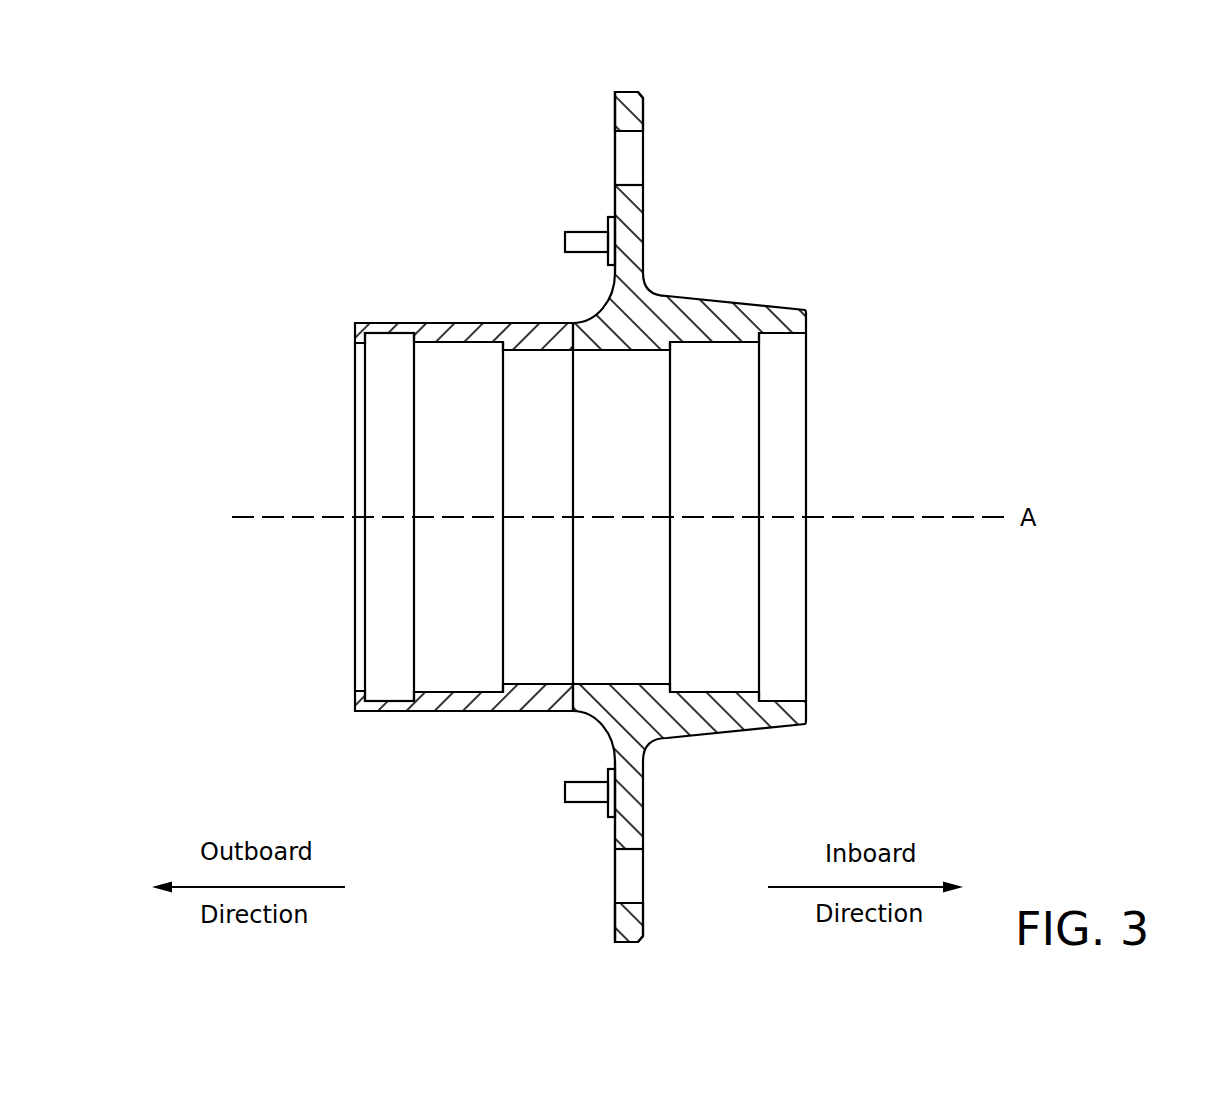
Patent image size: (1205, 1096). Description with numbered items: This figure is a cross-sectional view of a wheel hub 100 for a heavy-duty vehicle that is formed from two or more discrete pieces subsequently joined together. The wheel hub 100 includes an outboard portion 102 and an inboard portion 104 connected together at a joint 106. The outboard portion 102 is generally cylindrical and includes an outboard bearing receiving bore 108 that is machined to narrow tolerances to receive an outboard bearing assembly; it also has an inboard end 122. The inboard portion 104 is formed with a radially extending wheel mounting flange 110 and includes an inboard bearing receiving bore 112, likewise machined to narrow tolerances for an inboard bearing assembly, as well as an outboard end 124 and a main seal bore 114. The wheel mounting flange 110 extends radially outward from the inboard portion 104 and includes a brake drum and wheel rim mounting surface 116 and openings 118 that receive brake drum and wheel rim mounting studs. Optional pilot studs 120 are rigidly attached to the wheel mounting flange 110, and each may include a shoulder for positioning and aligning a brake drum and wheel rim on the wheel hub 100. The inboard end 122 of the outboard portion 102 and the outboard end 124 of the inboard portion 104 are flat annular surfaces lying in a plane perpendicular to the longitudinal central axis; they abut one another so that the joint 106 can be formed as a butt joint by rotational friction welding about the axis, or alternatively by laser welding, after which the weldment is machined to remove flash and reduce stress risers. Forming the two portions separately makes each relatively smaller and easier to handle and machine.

The wheel hub 100 is at (1008, 172).
The outboard portion 102 is at (298, 697).
The inboard portion 104 is at (730, 219).
The joint 106 is at (575, 571).
The outboard bearing receiving bore 108 is at (448, 334).
The wheel mounting flange 110 is at (645, 122).
The inboard bearing receiving bore 112 is at (695, 691).
The main seal bore 114 is at (777, 700).
The brake drum and wheel rim mounting surface 116 is at (612, 110).
The openings 118 is at (616, 185).
The pilot studs 120 is at (563, 239).
The inboard end 122 is at (566, 450).
The outboard end 124 is at (566, 450).